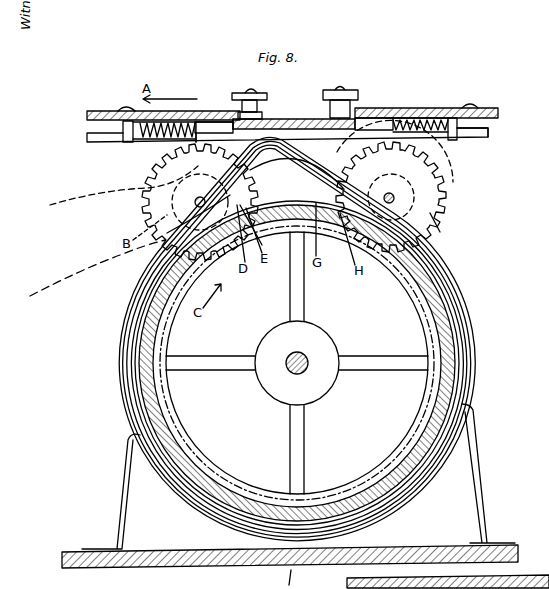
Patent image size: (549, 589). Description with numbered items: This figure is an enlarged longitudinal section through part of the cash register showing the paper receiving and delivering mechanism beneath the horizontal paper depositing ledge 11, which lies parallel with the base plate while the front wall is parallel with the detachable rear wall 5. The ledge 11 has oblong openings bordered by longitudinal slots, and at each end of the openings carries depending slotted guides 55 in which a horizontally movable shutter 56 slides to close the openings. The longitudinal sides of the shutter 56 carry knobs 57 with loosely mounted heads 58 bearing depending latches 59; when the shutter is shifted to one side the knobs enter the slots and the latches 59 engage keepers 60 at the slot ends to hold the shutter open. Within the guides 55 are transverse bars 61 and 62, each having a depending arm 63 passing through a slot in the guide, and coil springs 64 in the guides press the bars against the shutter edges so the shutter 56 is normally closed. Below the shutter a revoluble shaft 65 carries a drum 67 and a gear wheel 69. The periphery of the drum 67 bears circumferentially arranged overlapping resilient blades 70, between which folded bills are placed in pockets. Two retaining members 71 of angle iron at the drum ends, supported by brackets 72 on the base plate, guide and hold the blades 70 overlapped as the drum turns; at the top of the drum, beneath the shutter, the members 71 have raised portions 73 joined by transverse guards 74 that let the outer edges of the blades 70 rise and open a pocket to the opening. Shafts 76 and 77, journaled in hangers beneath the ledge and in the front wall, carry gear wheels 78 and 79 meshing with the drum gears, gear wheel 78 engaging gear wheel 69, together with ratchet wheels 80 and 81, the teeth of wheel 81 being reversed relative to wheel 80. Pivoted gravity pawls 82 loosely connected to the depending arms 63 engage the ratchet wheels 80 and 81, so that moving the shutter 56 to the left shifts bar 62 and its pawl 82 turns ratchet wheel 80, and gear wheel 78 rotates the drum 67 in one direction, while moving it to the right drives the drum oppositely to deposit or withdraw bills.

The detachable rear wall 5 is at (328, 170).
The paper depositing ledge 11 is at (100, 108).
The depending slotted guides 55 is at (456, 137).
The shutter 56 is at (275, 118).
The knobs 57 is at (270, 106).
The heads 58 is at (245, 97).
The depending latches 59 is at (217, 110).
The keepers 60 is at (127, 107).
The transverse bar 61 is at (385, 117).
The transverse bar 62 is at (215, 125).
The depending arm 63 is at (193, 143).
The coil springs 64 is at (150, 141).
The revoluble shaft 65 is at (305, 357).
The drum 67 is at (283, 386).
The gear wheel 69 is at (108, 330).
The resilient blades 70 is at (113, 345).
The retaining members 71 is at (118, 383).
The brackets 72 is at (118, 490).
The raised portions 73 is at (288, 157).
The transverse guards 74 is at (160, 200).
The shaft 76 is at (167, 233).
The shaft 77 is at (395, 200).
The gear wheel 78 is at (160, 185).
The gear wheel 79 is at (440, 232).
The ratchet wheel 80 is at (86, 273).
The ratchet wheel 81 is at (455, 180).
The gravity pawls 82 is at (114, 190).